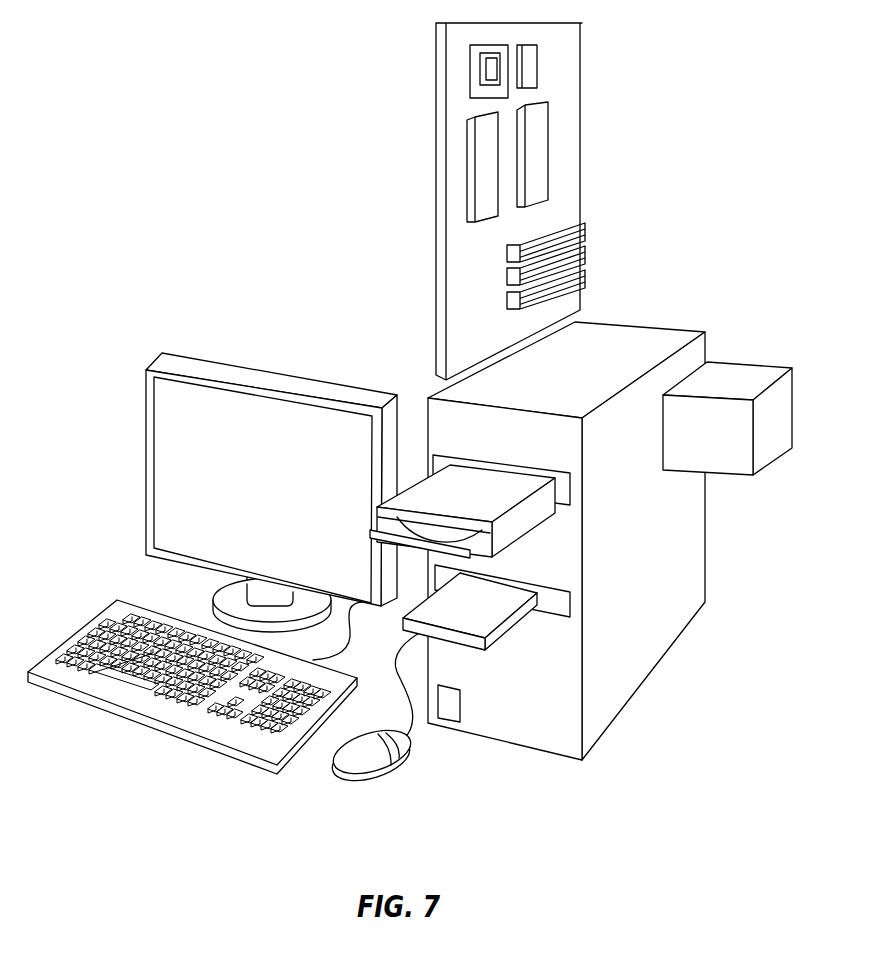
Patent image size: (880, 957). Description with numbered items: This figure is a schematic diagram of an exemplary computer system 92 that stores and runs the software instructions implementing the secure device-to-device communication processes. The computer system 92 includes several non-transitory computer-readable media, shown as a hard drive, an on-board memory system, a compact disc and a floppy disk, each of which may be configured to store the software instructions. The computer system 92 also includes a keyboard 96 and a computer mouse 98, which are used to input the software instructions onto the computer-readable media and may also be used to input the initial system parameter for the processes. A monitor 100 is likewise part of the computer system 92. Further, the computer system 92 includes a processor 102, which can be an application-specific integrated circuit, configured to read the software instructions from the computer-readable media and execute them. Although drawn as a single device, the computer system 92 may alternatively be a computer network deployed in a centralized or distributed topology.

The computer system 92 is at (192, 132).
The keyboard 96 is at (125, 608).
The computer mouse 98 is at (388, 763).
The monitor 100 is at (227, 372).
The processor 102 is at (478, 70).